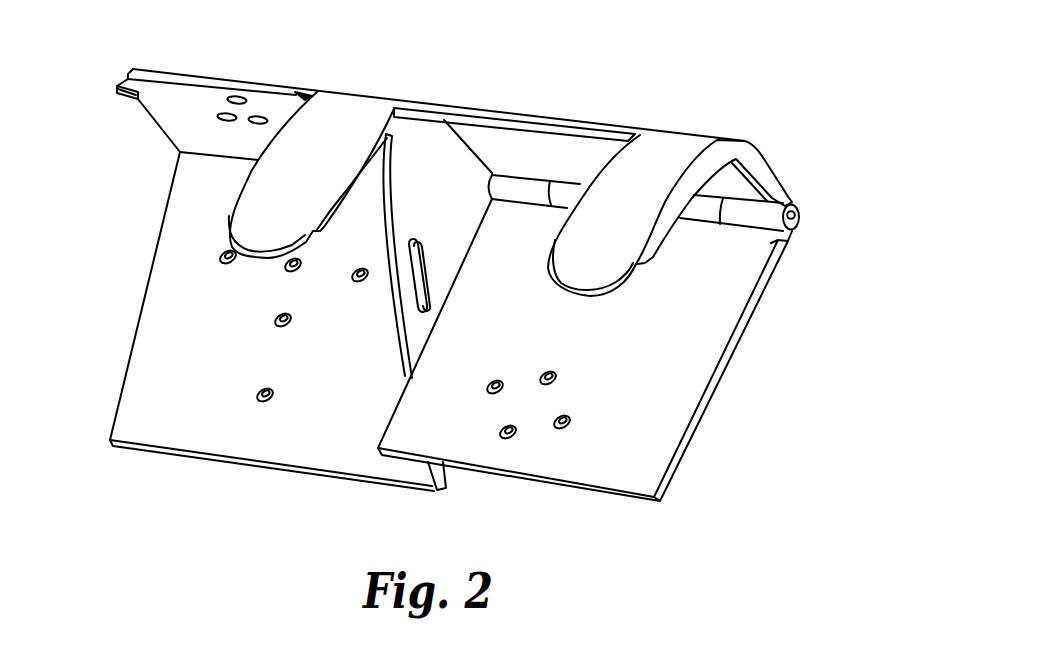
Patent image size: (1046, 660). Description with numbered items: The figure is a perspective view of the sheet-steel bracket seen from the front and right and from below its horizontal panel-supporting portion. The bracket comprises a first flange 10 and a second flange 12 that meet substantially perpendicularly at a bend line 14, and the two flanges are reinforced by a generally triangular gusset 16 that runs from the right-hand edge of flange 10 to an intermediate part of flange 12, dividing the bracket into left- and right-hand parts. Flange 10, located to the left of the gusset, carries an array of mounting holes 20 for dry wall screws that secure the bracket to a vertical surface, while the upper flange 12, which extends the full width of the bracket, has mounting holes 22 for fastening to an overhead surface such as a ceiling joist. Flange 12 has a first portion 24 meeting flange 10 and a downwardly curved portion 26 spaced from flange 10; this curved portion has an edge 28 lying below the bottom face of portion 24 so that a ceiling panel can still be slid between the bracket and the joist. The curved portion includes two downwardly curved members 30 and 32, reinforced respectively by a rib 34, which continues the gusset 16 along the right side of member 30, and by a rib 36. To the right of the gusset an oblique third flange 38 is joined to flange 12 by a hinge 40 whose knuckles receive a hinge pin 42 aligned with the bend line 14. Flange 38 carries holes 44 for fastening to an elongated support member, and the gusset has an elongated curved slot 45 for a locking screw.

The first flange 10 is at (226, 417).
The second flange 12 is at (181, 124).
The bend line 14 is at (215, 155).
The gusset 16 is at (413, 147).
The mounting holes 20 is at (352, 275).
The mounting holes 22 is at (228, 114).
The first portion 24 is at (162, 106).
The downwardly curved portion 26 is at (558, 119).
The edge 28 is at (495, 123).
The downwardly curved member 30 is at (304, 154).
The downwardly curved member 32 is at (644, 178).
The rib 34 is at (336, 194).
The rib 36 is at (654, 230).
The third oblique flange 38 is at (703, 327).
The hinge 40 is at (753, 211).
The hinge pin 42 is at (798, 216).
The holes 44 is at (513, 429).
The curved slot 45 is at (417, 268).